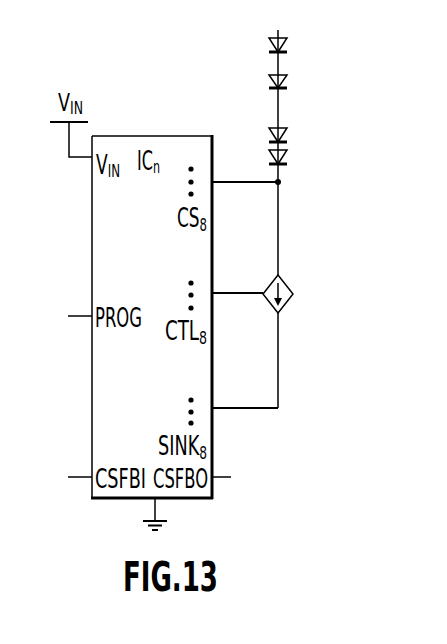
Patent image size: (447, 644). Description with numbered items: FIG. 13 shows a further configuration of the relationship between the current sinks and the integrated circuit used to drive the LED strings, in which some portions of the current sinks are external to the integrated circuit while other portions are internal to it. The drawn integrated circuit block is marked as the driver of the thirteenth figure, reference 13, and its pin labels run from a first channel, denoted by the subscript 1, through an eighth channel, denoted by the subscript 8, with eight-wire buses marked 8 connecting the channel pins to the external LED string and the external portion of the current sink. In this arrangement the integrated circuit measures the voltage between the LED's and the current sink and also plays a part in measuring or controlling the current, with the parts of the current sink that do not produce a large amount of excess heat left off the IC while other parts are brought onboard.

The first channel pins (CS1, CTL1, SINK1) 1 is at (182, 270).
The 8-wire bus / eighth channel 8 is at (229, 194).
The LED driver IC block of FIG. 13 is at (152, 317).